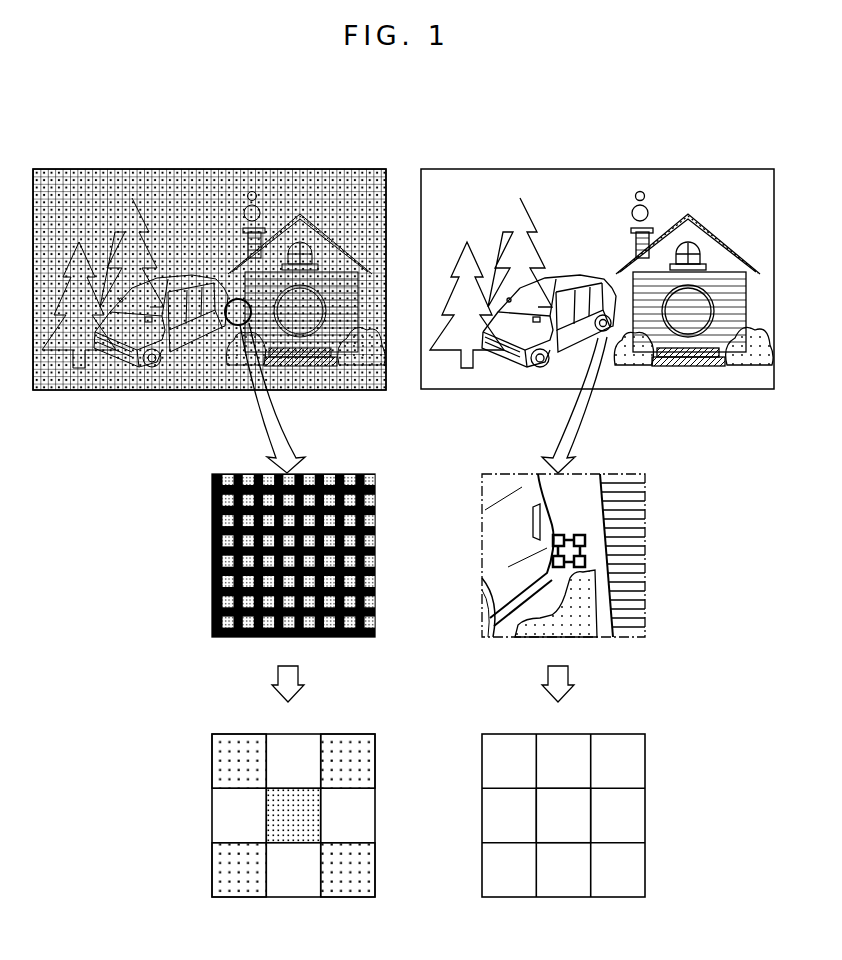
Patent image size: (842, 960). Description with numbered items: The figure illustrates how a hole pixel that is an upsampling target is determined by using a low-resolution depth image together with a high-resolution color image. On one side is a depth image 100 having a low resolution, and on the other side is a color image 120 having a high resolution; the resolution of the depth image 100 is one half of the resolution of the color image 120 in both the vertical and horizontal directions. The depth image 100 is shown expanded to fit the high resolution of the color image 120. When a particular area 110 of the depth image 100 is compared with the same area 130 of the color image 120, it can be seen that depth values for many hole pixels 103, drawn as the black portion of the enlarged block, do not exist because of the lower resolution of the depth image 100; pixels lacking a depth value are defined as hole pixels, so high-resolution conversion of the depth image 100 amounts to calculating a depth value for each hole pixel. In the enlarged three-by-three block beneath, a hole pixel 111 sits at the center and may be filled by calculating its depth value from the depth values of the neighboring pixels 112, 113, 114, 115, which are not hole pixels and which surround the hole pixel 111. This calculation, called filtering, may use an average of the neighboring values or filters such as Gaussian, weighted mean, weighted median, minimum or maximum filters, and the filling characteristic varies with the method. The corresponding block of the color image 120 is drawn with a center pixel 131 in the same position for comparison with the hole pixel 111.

The depth image 100 is at (272, 168).
The particular area 110 is at (230, 300).
The hole pixels 103 is at (326, 482).
The hole pixel 111 is at (295, 826).
The neighboring pixel 112 is at (358, 744).
The neighboring pixel 113 is at (236, 743).
The neighboring pixel 114 is at (238, 878).
The neighboring pixel 115 is at (350, 880).
The color image 120 is at (597, 261).
The same area 130 is at (612, 297).
The center pixel of second image block 131 is at (557, 830).